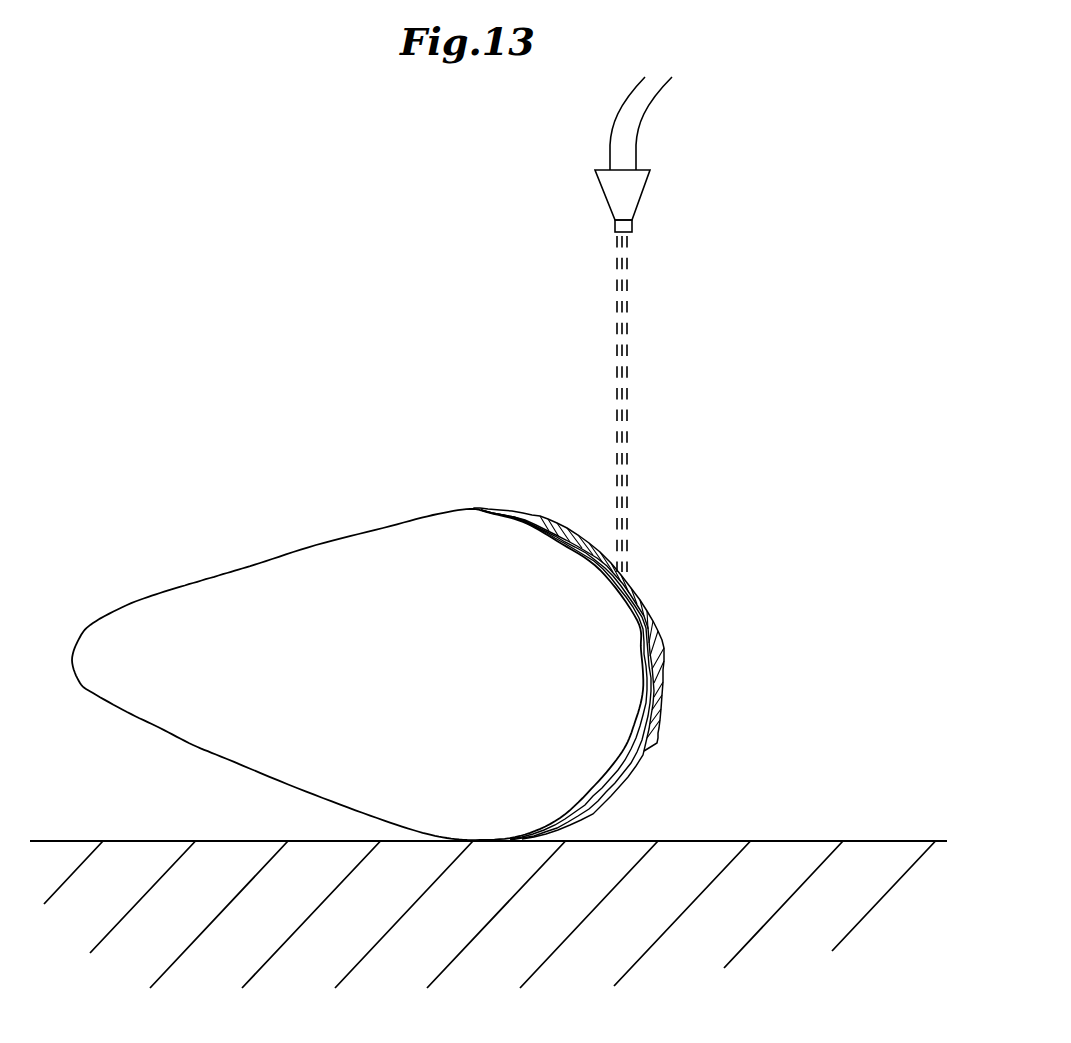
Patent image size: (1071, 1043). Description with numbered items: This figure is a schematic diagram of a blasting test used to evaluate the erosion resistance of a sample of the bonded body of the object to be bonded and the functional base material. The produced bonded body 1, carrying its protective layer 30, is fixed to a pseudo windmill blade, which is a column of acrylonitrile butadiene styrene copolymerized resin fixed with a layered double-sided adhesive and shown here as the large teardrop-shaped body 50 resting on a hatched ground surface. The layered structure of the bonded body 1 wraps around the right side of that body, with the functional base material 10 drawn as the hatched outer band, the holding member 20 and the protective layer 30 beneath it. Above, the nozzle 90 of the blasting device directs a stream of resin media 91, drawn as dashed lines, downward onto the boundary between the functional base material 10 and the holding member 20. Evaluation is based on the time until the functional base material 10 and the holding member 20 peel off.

The bonded body 1 is at (548, 489).
The functional base material 10 is at (662, 693).
The holding member 20 is at (625, 767).
The protective layer 30 is at (627, 786).
The object (teardrop body) 50 is at (226, 742).
The nozzle 90 is at (680, 149).
The resin media 91 is at (643, 353).